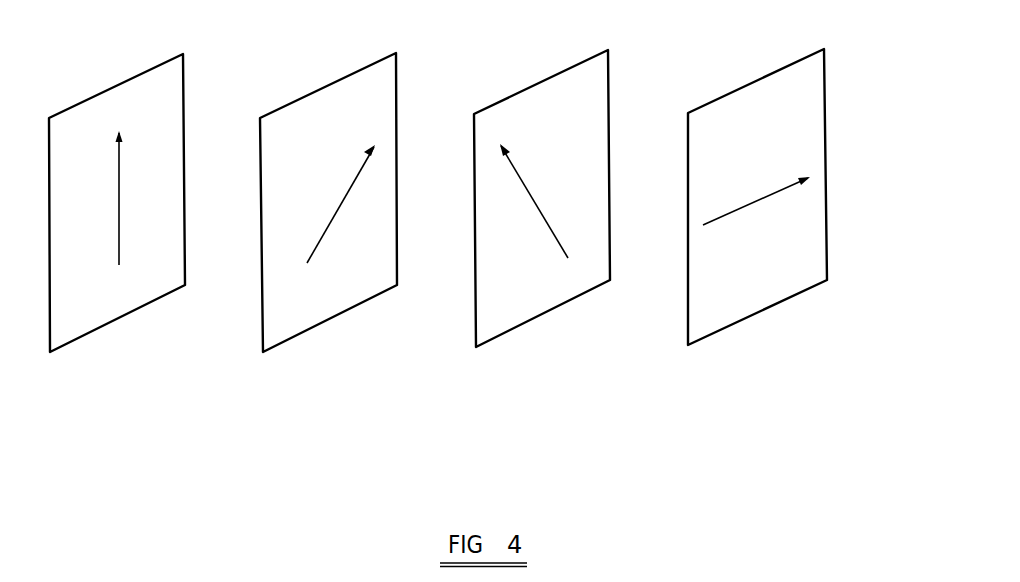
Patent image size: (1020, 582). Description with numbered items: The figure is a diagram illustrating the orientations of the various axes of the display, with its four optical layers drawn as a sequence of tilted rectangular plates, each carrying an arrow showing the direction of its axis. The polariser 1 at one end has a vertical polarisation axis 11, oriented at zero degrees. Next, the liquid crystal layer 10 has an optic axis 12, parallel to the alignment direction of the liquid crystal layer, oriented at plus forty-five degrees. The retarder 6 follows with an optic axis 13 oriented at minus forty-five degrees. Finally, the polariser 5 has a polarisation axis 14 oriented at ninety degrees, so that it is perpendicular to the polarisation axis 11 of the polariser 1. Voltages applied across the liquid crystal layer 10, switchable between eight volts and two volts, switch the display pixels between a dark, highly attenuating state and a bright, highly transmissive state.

The polariser 1 is at (117, 318).
The liquid crystal layer 10 is at (330, 318).
The retarder 6 is at (542, 313).
The polariser 5 is at (757, 313).
The polarisation axis 11 is at (119, 197).
The optic axis 12 is at (346, 196).
The optic axis 13 is at (535, 202).
The polarisation axis 14 is at (757, 200).